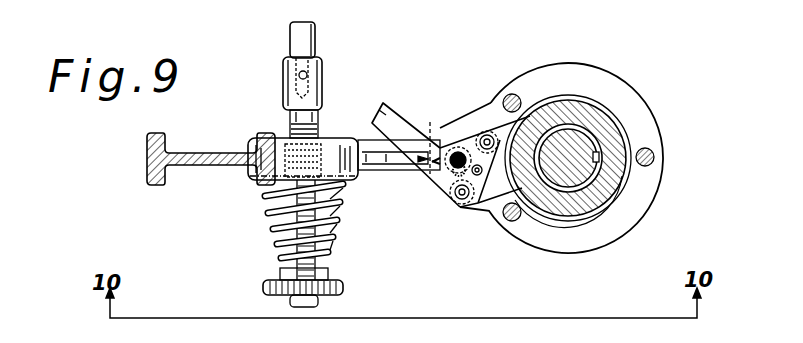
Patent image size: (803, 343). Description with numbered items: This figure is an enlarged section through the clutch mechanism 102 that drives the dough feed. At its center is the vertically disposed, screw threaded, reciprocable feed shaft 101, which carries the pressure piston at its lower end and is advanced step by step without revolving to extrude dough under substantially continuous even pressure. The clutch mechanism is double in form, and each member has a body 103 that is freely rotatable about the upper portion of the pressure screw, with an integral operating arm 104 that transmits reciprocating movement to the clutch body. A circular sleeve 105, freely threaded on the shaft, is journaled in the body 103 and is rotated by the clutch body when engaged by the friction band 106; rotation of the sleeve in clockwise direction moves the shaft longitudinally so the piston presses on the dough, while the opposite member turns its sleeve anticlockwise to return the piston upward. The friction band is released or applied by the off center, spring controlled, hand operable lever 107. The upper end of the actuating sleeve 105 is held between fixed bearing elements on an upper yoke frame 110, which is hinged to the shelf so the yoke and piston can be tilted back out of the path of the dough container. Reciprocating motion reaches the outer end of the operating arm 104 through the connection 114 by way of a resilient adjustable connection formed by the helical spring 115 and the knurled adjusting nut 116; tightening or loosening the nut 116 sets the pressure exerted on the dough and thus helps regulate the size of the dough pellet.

The feed shaft 101 is at (571, 182).
The clutch mechanism 102 is at (437, 134).
The body 103 is at (650, 173).
The operating arm 104 is at (398, 174).
The circular sleeve 105 is at (608, 128).
The friction band 106 is at (486, 190).
The hand operable lever 107 is at (398, 114).
The upper yoke frame 110 is at (185, 152).
The connection 114 is at (318, 40).
The helical spring 115 is at (268, 214).
The knurled adjusting nut 116 is at (345, 287).